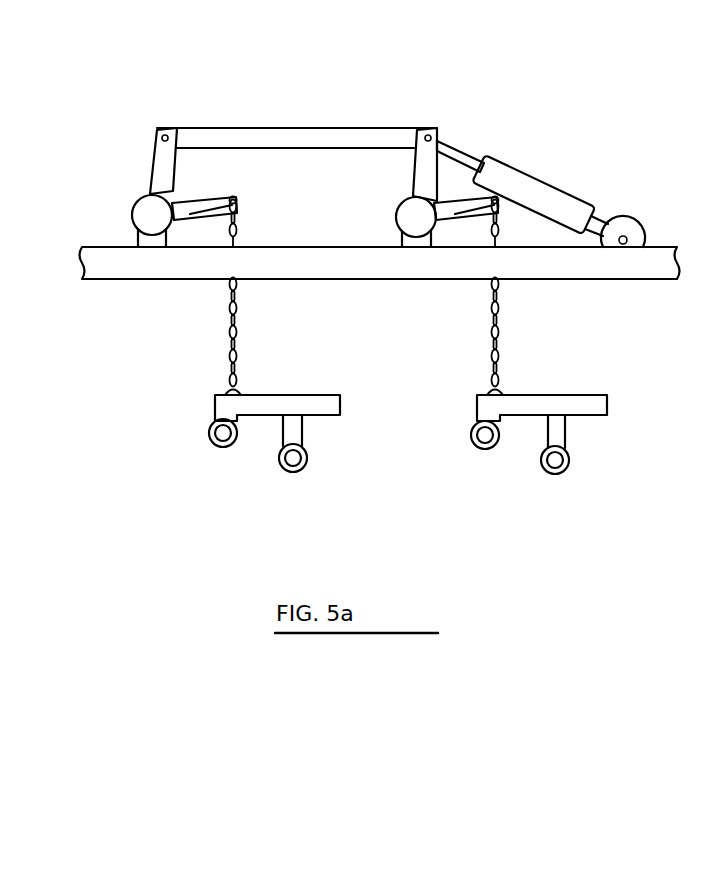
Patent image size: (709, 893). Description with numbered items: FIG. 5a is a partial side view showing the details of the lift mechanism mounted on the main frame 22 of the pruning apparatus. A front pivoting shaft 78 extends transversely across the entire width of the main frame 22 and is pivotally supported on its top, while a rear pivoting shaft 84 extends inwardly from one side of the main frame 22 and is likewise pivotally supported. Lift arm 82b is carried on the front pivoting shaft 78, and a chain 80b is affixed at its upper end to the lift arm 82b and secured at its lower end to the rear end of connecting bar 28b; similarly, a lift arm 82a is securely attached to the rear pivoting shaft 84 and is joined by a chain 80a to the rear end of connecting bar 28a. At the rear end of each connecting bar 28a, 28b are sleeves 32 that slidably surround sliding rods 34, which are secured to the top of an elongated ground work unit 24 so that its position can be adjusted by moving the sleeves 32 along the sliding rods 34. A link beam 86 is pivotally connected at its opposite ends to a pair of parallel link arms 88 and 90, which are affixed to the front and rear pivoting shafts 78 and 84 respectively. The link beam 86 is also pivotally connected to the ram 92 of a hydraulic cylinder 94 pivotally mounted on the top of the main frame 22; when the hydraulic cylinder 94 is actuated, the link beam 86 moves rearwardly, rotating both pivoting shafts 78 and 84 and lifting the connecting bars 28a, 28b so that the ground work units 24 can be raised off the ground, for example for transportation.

The main frame 22 is at (122, 282).
The ground work unit 24 is at (613, 149).
The connecting bar 28a is at (292, 395).
The connecting bar 28b is at (600, 395).
The sleeve 32 is at (210, 424).
The sliding rod 34 is at (213, 447).
The front pivoting shaft 78 is at (397, 212).
The chain 80a is at (228, 359).
The chain 80b is at (500, 333).
The lift arm 82a is at (190, 216).
The lift arm 82b is at (453, 216).
The rear pivoting shaft 84 is at (133, 213).
The link beam 86 is at (252, 128).
The link arm 88 is at (414, 157).
The link arm 90 is at (150, 161).
The ram 92 is at (452, 147).
The hydraulic cylinder 94 is at (538, 177).